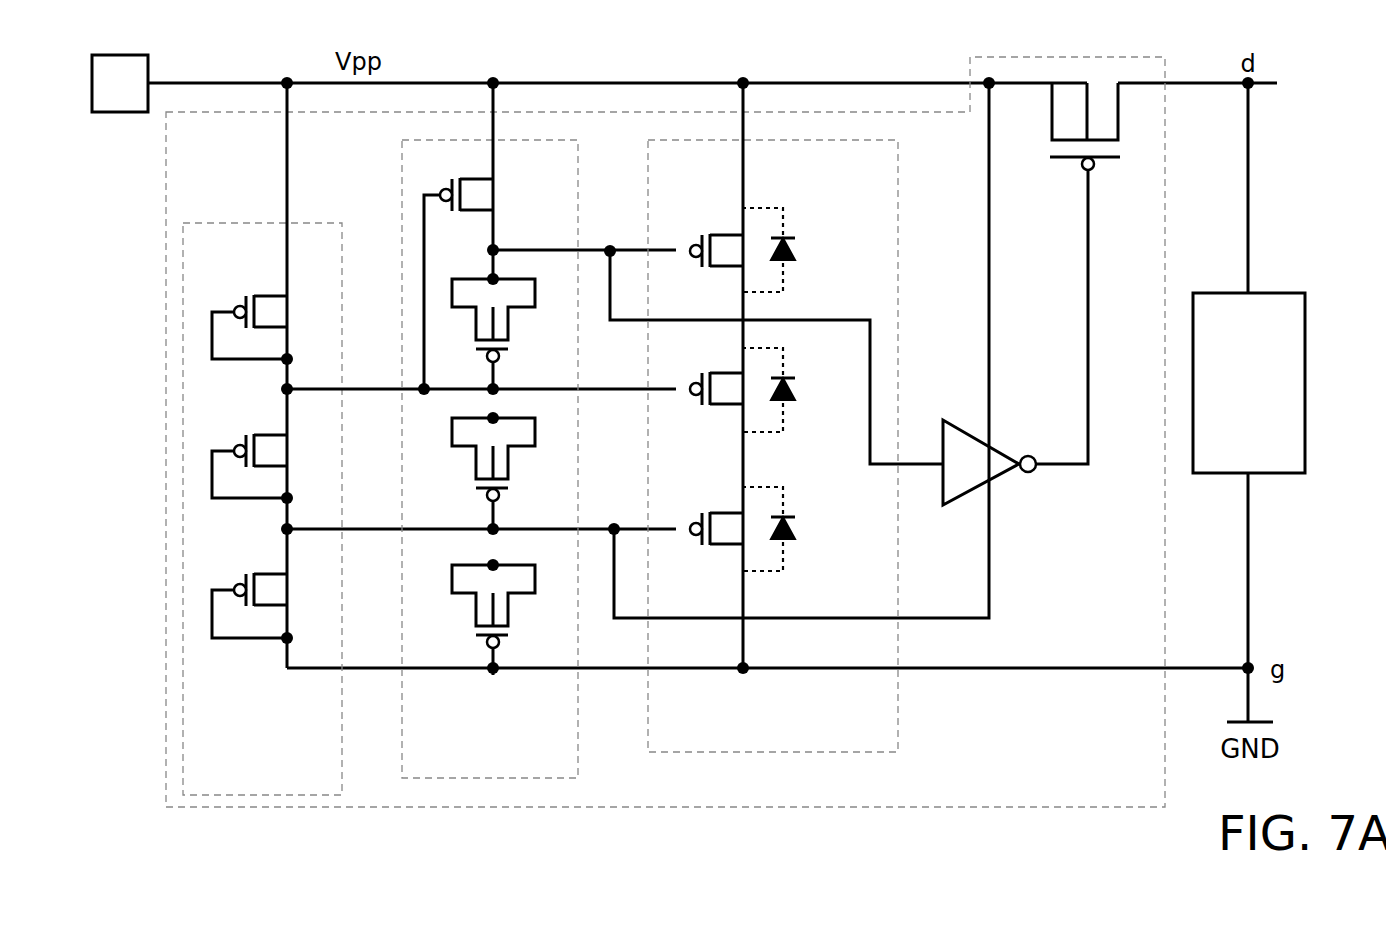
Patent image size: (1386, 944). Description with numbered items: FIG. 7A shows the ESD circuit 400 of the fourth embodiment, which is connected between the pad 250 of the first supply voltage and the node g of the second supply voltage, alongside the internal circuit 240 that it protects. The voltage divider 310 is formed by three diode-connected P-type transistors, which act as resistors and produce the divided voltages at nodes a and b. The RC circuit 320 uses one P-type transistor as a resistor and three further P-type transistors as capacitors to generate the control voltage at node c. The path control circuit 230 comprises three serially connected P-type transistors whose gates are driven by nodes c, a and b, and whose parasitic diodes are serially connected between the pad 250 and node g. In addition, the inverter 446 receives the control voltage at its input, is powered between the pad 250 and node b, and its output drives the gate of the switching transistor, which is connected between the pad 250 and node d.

The pad 250 is at (120, 113).
The ESD circuit 400 is at (1112, 789).
The voltage divider 310 is at (240, 787).
The RC circuit 320 is at (471, 764).
The path control circuit 230 is at (723, 741).
The inverter 446 is at (956, 420).
The internal circuit 240 is at (1226, 462).